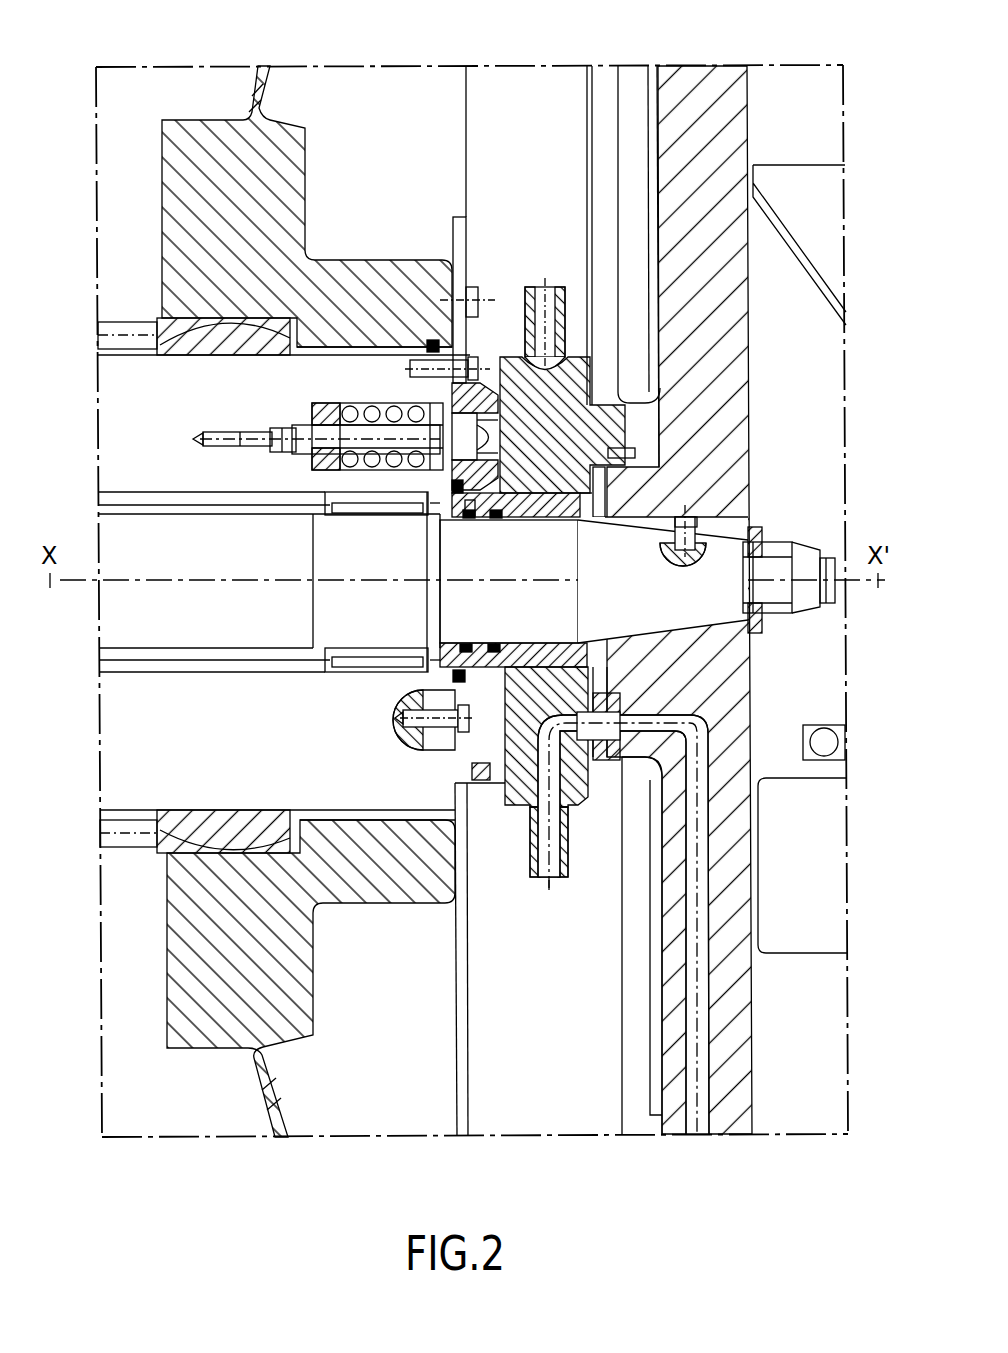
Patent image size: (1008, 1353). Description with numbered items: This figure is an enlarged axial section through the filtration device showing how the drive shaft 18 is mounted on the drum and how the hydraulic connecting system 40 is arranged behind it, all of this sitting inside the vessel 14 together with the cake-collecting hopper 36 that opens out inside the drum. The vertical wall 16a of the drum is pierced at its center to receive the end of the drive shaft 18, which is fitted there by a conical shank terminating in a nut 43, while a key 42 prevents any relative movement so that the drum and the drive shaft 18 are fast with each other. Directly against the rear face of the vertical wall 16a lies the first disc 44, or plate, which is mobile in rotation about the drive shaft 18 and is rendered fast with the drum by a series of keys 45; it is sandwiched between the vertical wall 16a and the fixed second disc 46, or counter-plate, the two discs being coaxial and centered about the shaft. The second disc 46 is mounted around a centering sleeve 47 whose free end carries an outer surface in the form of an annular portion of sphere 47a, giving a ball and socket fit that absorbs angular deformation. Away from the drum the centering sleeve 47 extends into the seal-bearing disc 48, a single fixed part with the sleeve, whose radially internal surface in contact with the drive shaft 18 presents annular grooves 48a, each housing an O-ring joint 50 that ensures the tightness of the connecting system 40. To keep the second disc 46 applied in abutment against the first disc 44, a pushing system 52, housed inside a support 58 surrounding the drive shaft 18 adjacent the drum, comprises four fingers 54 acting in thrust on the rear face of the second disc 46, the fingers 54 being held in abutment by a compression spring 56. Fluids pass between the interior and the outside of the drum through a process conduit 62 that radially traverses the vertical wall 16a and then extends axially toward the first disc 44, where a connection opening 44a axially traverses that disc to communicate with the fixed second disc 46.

The vessel 14 is at (257, 88).
The vertical wall 16a is at (735, 132).
The cake-collecting hopper 36 is at (808, 262).
The hydraulic connecting system 40 is at (533, 250).
The drive shaft 18 is at (165, 540).
The support 58 is at (152, 407).
The pushing system 52 is at (268, 407).
The compression spring 56 is at (346, 403).
The fingers 54 is at (455, 415).
The keys 45 is at (635, 452).
The key 42 is at (697, 517).
The O-ring joint 50 is at (468, 518).
The annular grooves 48a is at (522, 518).
The annular portion of sphere 47a is at (588, 520).
The centering sleeve 47 is at (520, 643).
The nut 43 is at (780, 616).
The connection opening 44a is at (610, 720).
The seal-bearing disc 48 is at (455, 770).
The second disc 46 is at (518, 800).
The first disc 44 is at (603, 757).
The process conduit 62 is at (690, 1012).